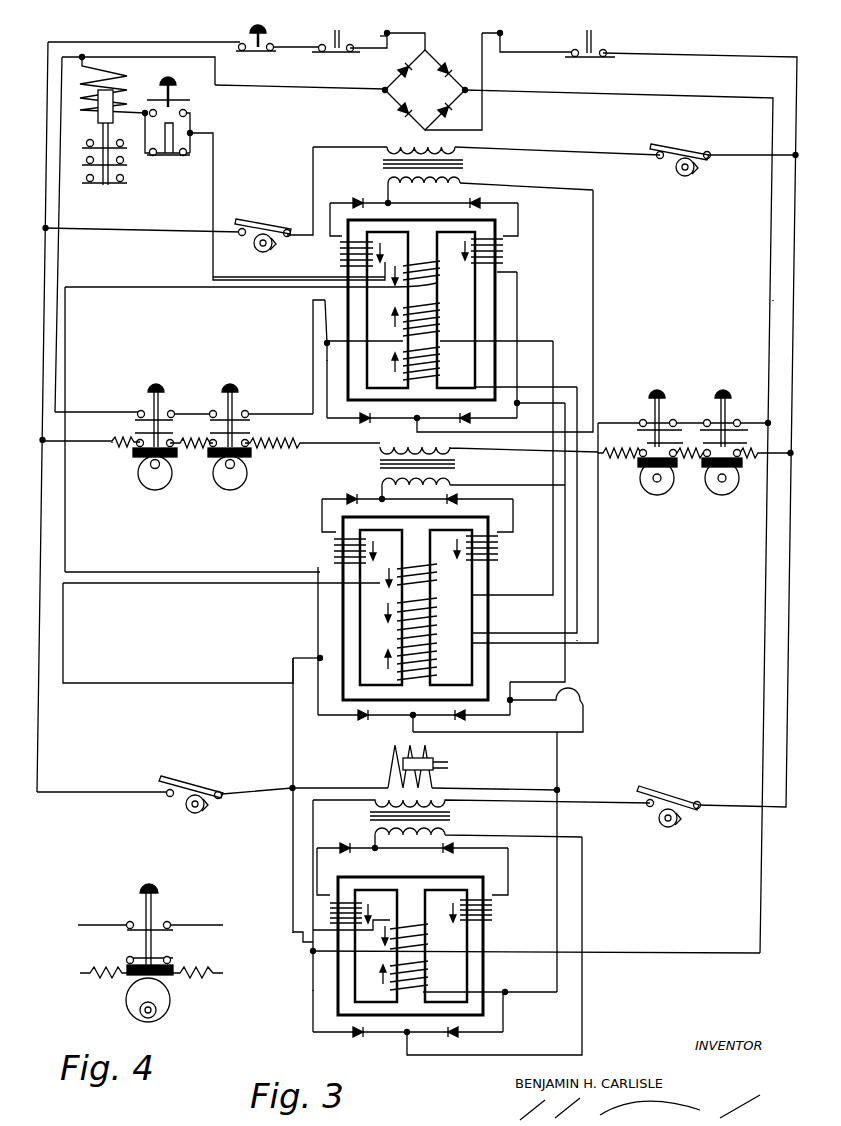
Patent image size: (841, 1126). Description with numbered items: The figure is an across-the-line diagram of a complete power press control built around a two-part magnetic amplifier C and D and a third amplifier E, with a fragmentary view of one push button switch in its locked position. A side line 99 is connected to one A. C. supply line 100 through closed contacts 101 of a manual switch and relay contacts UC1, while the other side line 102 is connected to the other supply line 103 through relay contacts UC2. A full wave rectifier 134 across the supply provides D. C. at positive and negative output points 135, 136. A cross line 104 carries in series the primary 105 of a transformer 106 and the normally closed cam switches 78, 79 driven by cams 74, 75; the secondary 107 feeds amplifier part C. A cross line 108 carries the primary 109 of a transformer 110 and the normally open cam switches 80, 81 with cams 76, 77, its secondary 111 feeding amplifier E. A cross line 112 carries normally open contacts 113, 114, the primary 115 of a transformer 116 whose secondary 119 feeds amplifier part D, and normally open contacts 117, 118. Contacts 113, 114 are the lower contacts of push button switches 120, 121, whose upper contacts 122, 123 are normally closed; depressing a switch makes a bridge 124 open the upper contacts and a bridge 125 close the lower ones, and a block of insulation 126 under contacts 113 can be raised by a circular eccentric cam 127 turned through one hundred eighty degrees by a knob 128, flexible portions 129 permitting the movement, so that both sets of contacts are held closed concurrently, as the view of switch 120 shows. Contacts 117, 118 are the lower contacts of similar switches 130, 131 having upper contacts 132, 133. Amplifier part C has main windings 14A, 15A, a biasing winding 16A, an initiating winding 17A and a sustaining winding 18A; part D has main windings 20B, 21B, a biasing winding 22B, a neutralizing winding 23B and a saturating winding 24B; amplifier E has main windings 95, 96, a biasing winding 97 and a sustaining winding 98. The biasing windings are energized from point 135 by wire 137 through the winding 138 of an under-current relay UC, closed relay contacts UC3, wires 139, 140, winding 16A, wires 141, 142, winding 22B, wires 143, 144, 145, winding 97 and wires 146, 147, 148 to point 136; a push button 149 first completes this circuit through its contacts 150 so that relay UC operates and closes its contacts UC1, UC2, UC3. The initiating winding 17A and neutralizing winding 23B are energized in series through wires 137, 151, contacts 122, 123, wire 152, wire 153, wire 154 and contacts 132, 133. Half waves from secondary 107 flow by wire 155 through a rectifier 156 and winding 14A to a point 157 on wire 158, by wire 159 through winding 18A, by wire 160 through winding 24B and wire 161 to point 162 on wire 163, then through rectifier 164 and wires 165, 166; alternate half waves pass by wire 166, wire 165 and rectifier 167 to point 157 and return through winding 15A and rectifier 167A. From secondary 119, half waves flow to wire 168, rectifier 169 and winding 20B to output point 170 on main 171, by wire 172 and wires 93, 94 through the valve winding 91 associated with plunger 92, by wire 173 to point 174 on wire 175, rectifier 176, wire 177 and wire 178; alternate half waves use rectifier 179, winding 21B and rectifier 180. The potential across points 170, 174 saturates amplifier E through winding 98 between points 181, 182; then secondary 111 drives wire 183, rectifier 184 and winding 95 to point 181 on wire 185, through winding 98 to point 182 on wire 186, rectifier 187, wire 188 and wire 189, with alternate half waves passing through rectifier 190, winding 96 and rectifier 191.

In FIG. 3, the side line 99 is at (47, 68).
In FIG. 3, the contacts of manual switch 101 is at (262, 47).
In FIG. 3, the relay contacts UC1 is at (368, 48).
In FIG. 3, the A.C. supply line 100 is at (387, 33).
In FIG. 3, the A.C. supply line 103 is at (500, 33).
In FIG. 3, the relay contacts UC2 is at (590, 51).
In FIG. 3, the side line 102 is at (703, 58).
In FIG. 3, the full wave rectifier 134 is at (437, 96).
In FIG. 3, the positive output point 135 is at (384, 89).
In FIG. 3, the negative output point 136 is at (468, 90).
In FIG. 3, the wire 137 is at (290, 87).
In FIG. 3, the wire 148 is at (710, 100).
In FIG. 3, the wire 147 is at (771, 258).
In FIG. 3, the relay winding 138 is at (112, 74).
In FIG. 3, the under-current relay UC is at (94, 137).
In FIG. 3, the push button 149 is at (168, 80).
In FIG. 3, the contacts 150 is at (186, 109).
In FIG. 3, the relay contacts UC3 is at (168, 148).
In FIG. 3, the wire 139 is at (217, 147).
In FIG. 3, the cross line 104 is at (116, 230).
In FIG. 3, the cam switch 78 is at (250, 222).
In FIG. 3, the cam 74 is at (254, 244).
In FIG. 3, the cam switch 79 is at (677, 146).
In FIG. 3, the cam 75 is at (677, 170).
In FIG. 3, the primary 105 is at (458, 152).
In FIG. 3, the transformer 106 is at (465, 165).
In FIG. 3, the secondary 107 is at (460, 185).
In FIG. 3, the wire 155 is at (412, 203).
In FIG. 3, the rectifier 156 is at (358, 196).
In FIG. 3, the rectifier 167A is at (480, 200).
In FIG. 3, the wire 166 is at (595, 218).
In FIG. 3, the amplifier part C is at (532, 299).
In FIG. 3, the main winding 14A is at (348, 254).
In FIG. 3, the main winding 15A is at (500, 255).
In FIG. 3, the biasing winding 16A is at (440, 280).
In FIG. 3, the initiating winding 17A is at (440, 321).
In FIG. 3, the sustaining winding 18A is at (440, 362).
In FIG. 3, the wire 140 is at (231, 279).
In FIG. 3, the wire 141 is at (131, 287).
In FIG. 3, the wire 152 is at (312, 302).
In FIG. 3, the point 157 is at (325, 337).
In FIG. 3, the wire 158 is at (325, 360).
In FIG. 3, the wire 159 is at (397, 343).
In FIG. 3, the wire 163 is at (519, 322).
In FIG. 3, the rectifier 167 is at (368, 417).
In FIG. 3, the wire 165 is at (448, 417).
In FIG. 3, the rectifier 164 is at (468, 417).
In FIG. 3, the rectifier 180 is at (522, 386).
In FIG. 3, the point 162 is at (520, 401).
In FIG. 3, the wire 153 is at (578, 348).
In FIG. 3, the wire 161 is at (565, 512).
In FIG. 3, the wire 160 is at (590, 621).
In FIG. 3, the wire 154 is at (599, 530).
In FIG. 3, the wire 151 is at (58, 250).
In FIG. 3, the push button switch 120 is at (163, 385).
In FIG. 4, the push button switch 120 is at (158, 890).
In FIG. 3, the push button switch 121 is at (238, 385).
In FIG. 3, the upper contacts 122 is at (168, 410).
In FIG. 4, the upper contacts 122 is at (160, 922).
In FIG. 3, the upper contacts 123 is at (243, 410).
In FIG. 3, the bridge 124 is at (135, 420).
In FIG. 4, the bridge 124 is at (127, 931).
In FIG. 3, the bridge 125 is at (173, 432).
In FIG. 4, the bridge 125 is at (130, 956).
In FIG. 3, the lower contacts 113 is at (135, 441).
In FIG. 4, the lower contacts 113 is at (153, 958).
In FIG. 3, the lower contacts 114 is at (252, 441).
In FIG. 3, the cross line 112 is at (60, 441).
In FIG. 3, the flexible portions 129 is at (116, 442).
In FIG. 4, the flexible portions 129 is at (108, 967).
In FIG. 3, the block of insulation 126 is at (135, 458).
In FIG. 4, the block of insulation 126 is at (173, 975).
In FIG. 3, the circular eccentric cam 127 is at (163, 471).
In FIG. 4, the circular eccentric cam 127 is at (165, 998).
In FIG. 3, the knob 128 is at (150, 466).
In FIG. 4, the knob 128 is at (158, 1010).
In FIG. 3, the upper contacts 132 is at (642, 430).
In FIG. 3, the upper contacts 133 is at (716, 432).
In FIG. 3, the push button switch 130 is at (652, 398).
In FIG. 3, the push button switch 131 is at (720, 398).
In FIG. 3, the lower contacts 117 is at (645, 453).
In FIG. 3, the lower contacts 118 is at (727, 452).
In FIG. 3, the primary 115 is at (408, 445).
In FIG. 3, the transformer 116 is at (455, 468).
In FIG. 3, the secondary 119 is at (382, 485).
In FIG. 3, the wire 178 is at (510, 488).
In FIG. 3, the wire 168 is at (396, 499).
In FIG. 3, the rectifier 169 is at (352, 494).
In FIG. 3, the amplifier part D is at (518, 623).
In FIG. 3, the main winding 20B is at (340, 551).
In FIG. 3, the main winding 21B is at (493, 548).
In FIG. 3, the biasing winding 22B is at (428, 575).
In FIG. 3, the neutralizing winding 23B is at (427, 618).
In FIG. 3, the saturating winding 24B is at (427, 661).
In FIG. 3, the wire 142 is at (174, 573).
In FIG. 3, the wire 143 is at (175, 584).
In FIG. 3, the wire 144 is at (63, 648).
In FIG. 3, the output point 170 is at (318, 656).
In FIG. 3, the main 171 is at (318, 618).
In FIG. 3, the wire 177 is at (412, 714).
In FIG. 3, the rectifier 179 is at (361, 714).
In FIG. 3, the rectifier 176 is at (462, 714).
In FIG. 3, the point 174 is at (512, 702).
In FIG. 3, the wire 175 is at (512, 730).
In FIG. 3, the wire 173 is at (583, 712).
In FIG. 3, the wire 172 is at (293, 750).
In FIG. 3, the wire 93 is at (366, 788).
In FIG. 3, the valve winding 91 is at (424, 752).
In FIG. 3, the plunger 92 is at (434, 759).
In FIG. 3, the wire 94 is at (470, 789).
In FIG. 3, the cam switch 80 is at (182, 780).
In FIG. 3, the cam 76 is at (186, 810).
In FIG. 3, the cam switch 81 is at (670, 791).
In FIG. 3, the cam 77 is at (656, 818).
In FIG. 3, the primary 109 is at (450, 806).
In FIG. 3, the transformer 110 is at (370, 816).
In FIG. 3, the secondary 111 is at (448, 831).
In FIG. 3, the wire 189 is at (582, 860).
In FIG. 3, the wire 183 is at (388, 848).
In FIG. 3, the rectifier 184 is at (345, 842).
In FIG. 3, the rectifier 191 is at (452, 846).
In FIG. 3, the amplifier E is at (517, 992).
In FIG. 3, the main winding 95 is at (330, 914).
In FIG. 3, the main winding 96 is at (487, 915).
In FIG. 3, the biasing winding 97 is at (428, 938).
In FIG. 3, the sustaining winding 98 is at (428, 975).
In FIG. 3, the wire 145 is at (291, 931).
In FIG. 3, the point 181 is at (311, 953).
In FIG. 3, the wire 185 is at (313, 991).
In FIG. 3, the wire 146 is at (700, 952).
In FIG. 3, the point 182 is at (507, 992).
In FIG. 3, the wire 186 is at (503, 1032).
In FIG. 3, the rectifier 190 is at (360, 1036).
In FIG. 3, the wire 188 is at (409, 1032).
In FIG. 3, the rectifier 187 is at (455, 1036).
In FIG. 3, the cross line 108 is at (48, 792).